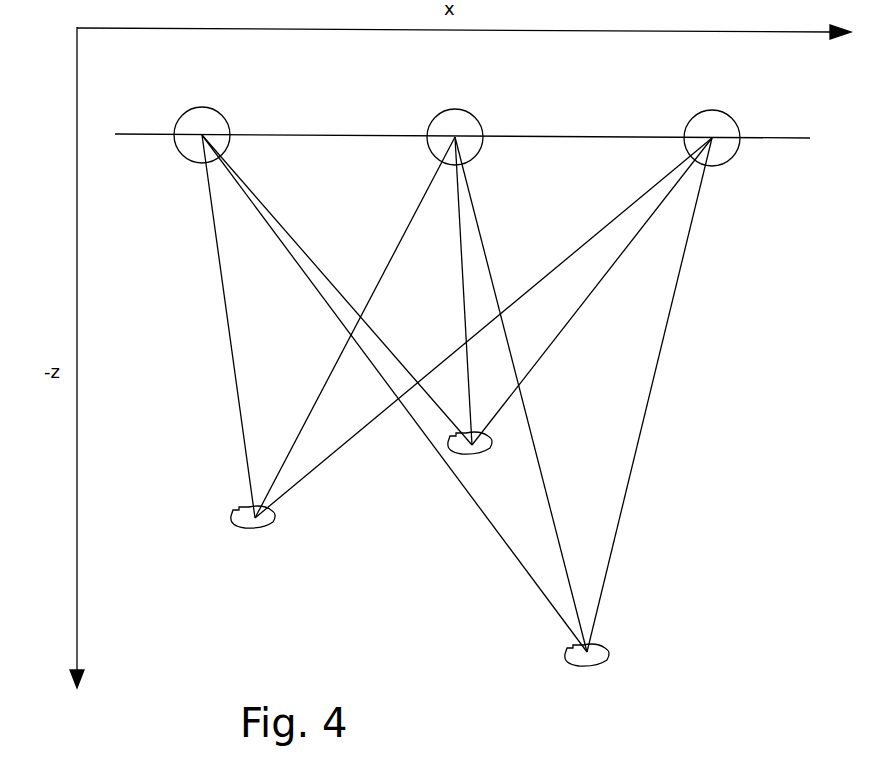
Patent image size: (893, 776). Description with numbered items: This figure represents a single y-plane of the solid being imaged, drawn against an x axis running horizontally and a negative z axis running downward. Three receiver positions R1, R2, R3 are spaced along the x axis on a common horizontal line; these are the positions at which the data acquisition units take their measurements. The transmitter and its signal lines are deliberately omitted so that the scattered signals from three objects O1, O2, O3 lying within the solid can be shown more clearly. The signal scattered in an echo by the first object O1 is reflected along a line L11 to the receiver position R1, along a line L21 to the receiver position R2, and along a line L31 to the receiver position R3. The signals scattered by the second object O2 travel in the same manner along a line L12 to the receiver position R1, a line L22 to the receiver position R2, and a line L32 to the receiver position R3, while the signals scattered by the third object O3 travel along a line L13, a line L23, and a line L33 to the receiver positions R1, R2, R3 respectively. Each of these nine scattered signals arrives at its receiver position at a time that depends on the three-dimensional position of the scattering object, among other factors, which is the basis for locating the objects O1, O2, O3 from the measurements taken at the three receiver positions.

The receiver position R1 is at (182, 88).
The receiver position R2 is at (433, 88).
The receiver position R3 is at (698, 111).
The line L11 is at (214, 287).
The line L12 is at (318, 223).
The line L13 is at (294, 261).
The line L21 is at (402, 237).
The line L22 is at (464, 305).
The line L23 is at (490, 272).
The line L31 is at (598, 233).
The line L32 is at (593, 290).
The line L33 is at (670, 313).
The object O1 is at (244, 530).
The object O2 is at (467, 457).
The object O3 is at (605, 645).